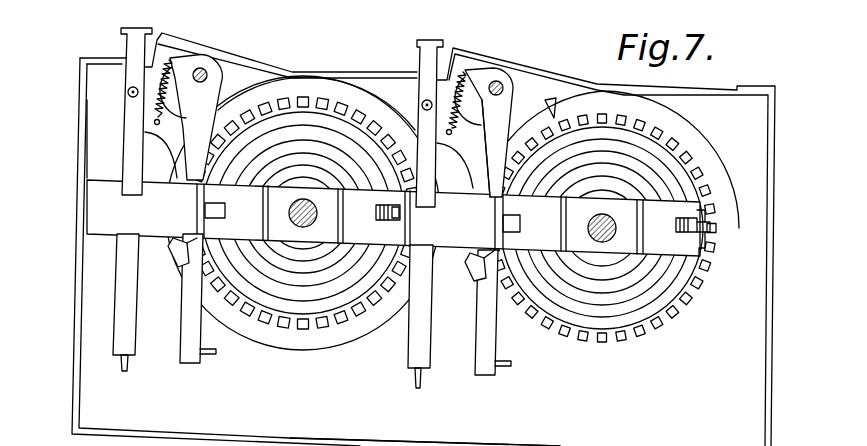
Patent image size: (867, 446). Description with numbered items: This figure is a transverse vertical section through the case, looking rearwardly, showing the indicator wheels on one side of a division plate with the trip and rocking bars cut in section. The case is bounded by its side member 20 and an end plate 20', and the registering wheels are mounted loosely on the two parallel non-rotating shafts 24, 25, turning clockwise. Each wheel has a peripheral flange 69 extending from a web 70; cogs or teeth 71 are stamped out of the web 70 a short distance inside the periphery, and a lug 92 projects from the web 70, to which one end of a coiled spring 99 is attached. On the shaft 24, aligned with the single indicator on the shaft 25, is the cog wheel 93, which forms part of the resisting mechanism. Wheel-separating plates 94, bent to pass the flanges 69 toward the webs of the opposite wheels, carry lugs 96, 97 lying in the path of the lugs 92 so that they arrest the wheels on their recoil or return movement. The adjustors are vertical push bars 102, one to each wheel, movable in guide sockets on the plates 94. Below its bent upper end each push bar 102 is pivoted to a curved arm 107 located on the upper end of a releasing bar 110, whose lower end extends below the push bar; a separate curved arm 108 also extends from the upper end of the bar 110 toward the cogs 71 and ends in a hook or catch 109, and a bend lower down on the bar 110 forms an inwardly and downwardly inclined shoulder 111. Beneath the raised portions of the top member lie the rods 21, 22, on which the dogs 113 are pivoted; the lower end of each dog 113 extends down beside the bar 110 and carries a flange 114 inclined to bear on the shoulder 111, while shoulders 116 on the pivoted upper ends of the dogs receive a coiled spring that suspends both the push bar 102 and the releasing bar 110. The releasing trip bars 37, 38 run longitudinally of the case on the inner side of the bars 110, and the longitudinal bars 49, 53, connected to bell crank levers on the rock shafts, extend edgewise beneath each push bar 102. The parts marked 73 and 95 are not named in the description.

The side member of the case 20 is at (435, 239).
The end plate of the case 20' is at (60, 143).
The rod 21 is at (497, 82).
The rod 22 is at (203, 72).
The shaft 24 is at (628, 231).
The shaft 25 is at (318, 214).
The releasing trip bar 37 is at (507, 373).
The releasing trip bar 38 is at (210, 355).
The longitudinal bar 49 is at (417, 388).
The longitudinal bar 53 is at (122, 372).
The peripheral flange 69 is at (670, 159).
The web 70 is at (322, 338).
The cogs or teeth 71 is at (280, 326).
The pawl tab 73 is at (702, 247).
The lug 92 is at (382, 213).
The cog wheel 93 is at (448, 248).
The wheel-separating plate 94 is at (704, 240).
The slide bar 95 is at (400, 217).
The lug 96 is at (520, 222).
The lug 97 is at (205, 212).
The coiled spring 99 is at (343, 286).
The push bar 102 is at (128, 115).
The curved arm 107 is at (163, 134).
The curved arm 108 is at (510, 103).
The hook or catch 109 is at (290, 72).
The releasing bar 110 is at (473, 192).
The inclined shoulder 111 is at (182, 266).
The dog 113 is at (203, 115).
The flange 114 is at (170, 250).
The shoulder 116 is at (485, 77).